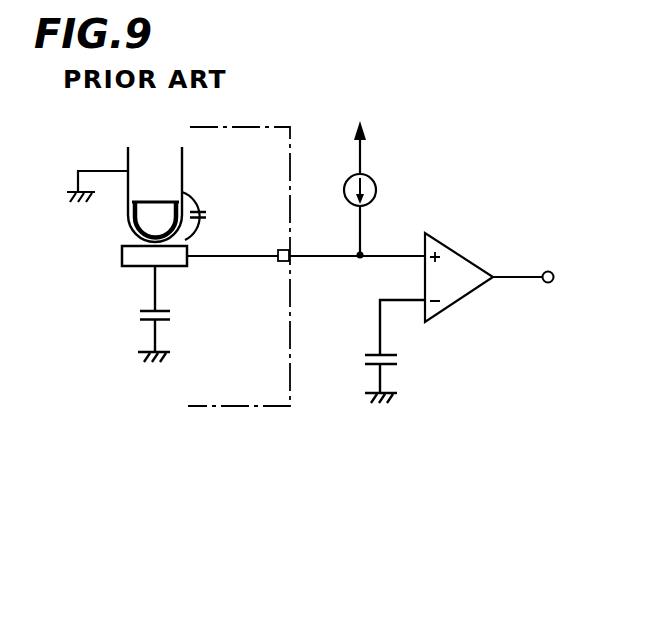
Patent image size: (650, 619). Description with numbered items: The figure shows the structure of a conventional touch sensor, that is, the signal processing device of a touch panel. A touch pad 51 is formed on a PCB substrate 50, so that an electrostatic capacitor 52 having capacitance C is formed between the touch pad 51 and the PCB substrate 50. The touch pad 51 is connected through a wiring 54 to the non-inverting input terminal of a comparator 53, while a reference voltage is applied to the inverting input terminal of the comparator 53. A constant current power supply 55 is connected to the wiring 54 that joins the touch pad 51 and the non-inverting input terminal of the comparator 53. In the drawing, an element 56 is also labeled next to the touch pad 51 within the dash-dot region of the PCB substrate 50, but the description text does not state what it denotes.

The PCB substrate 50 is at (232, 130).
The touch pad 51 is at (122, 253).
The electrostatic capacitor 52 is at (140, 314).
The comparator 53 is at (468, 258).
The wiring 54 is at (320, 259).
The constant current power supply 55 is at (378, 190).
The probe electrode (U-shaped) 56 is at (182, 170).